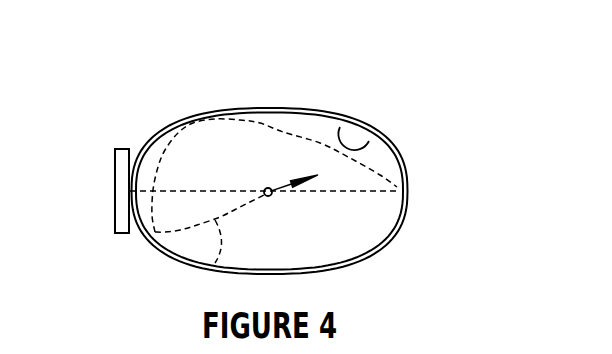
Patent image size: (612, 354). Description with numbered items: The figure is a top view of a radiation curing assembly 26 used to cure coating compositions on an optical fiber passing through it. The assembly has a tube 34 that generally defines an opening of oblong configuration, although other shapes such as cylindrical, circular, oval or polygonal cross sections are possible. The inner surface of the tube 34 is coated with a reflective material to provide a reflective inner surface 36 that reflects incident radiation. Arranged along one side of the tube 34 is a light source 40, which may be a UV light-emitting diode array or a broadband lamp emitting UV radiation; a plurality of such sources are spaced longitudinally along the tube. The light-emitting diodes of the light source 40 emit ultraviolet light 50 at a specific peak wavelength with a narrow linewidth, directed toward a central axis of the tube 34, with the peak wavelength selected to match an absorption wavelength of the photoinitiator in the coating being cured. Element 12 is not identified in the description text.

The pivot 12 is at (265, 189).
The radiation curing assembly 26 is at (329, 161).
The tube 34 is at (297, 110).
The reflective inner surface 36 is at (378, 135).
The light source 40 is at (114, 180).
The ultraviolet light 50 is at (214, 263).